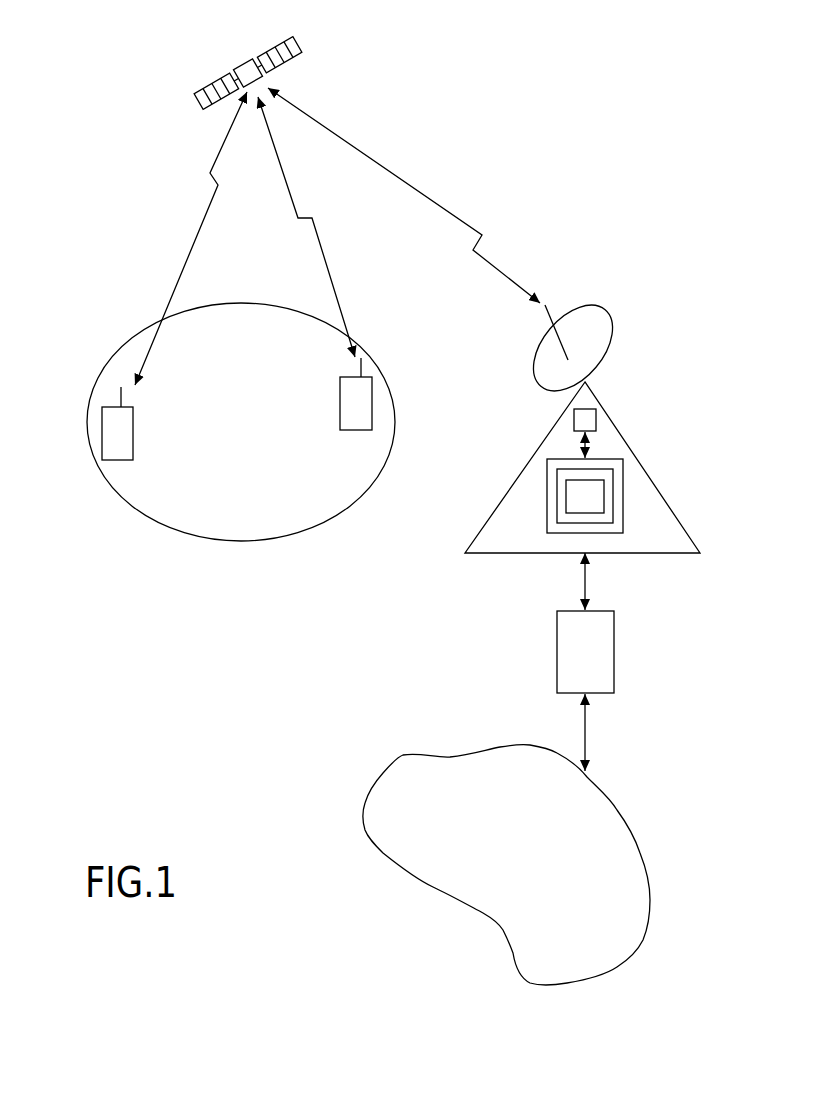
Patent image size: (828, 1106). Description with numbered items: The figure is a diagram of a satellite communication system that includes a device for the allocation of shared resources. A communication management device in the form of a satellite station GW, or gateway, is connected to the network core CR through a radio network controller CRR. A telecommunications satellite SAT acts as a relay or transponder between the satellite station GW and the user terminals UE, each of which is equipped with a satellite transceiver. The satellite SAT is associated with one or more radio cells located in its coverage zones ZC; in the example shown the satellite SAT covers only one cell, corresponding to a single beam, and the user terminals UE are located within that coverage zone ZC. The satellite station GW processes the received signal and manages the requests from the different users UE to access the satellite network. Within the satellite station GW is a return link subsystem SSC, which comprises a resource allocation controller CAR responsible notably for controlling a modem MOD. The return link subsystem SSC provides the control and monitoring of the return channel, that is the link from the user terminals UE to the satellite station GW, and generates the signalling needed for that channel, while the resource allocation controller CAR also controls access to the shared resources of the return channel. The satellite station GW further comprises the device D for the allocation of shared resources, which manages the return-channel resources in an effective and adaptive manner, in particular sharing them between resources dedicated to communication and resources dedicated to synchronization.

The telecommunications satellite SAT is at (283, 67).
The satellite station GW is at (610, 315).
The user terminal UE is at (102, 440).
The coverage zone ZC is at (243, 542).
The modem MOD is at (597, 420).
The return link subsystem SSC is at (547, 495).
The resource allocation controller CAR is at (613, 483).
The device for the allocation of shared resources D is at (566, 505).
The radio network controller CRR is at (557, 650).
The network core CR is at (533, 869).